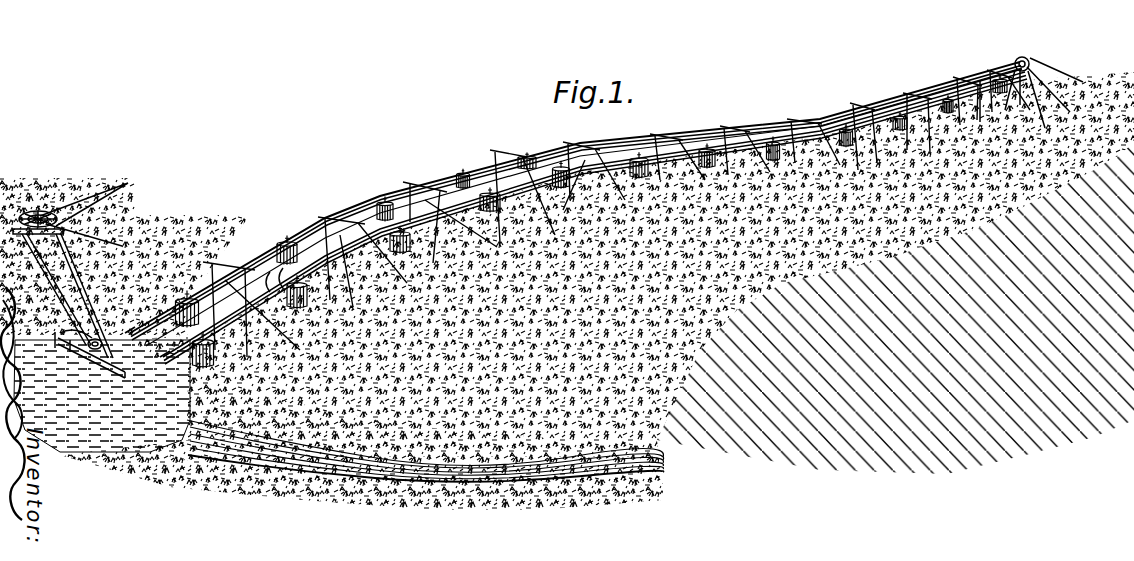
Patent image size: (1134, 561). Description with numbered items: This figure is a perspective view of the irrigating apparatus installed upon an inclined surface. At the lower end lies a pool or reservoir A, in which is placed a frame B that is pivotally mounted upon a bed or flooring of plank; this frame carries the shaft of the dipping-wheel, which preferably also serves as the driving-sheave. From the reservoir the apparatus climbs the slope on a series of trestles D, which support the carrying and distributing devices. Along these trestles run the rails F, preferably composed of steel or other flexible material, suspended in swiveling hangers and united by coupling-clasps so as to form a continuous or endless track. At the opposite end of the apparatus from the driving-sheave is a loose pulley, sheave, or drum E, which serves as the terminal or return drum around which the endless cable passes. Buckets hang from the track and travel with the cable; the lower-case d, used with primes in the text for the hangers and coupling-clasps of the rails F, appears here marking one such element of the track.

The pool or reservoir A is at (102, 396).
The frame B is at (131, 315).
The trestles D is at (616, 213).
The rails F is at (246, 251).
The buckets d is at (340, 212).
The loose pulley, sheave, or drum E is at (1017, 57).